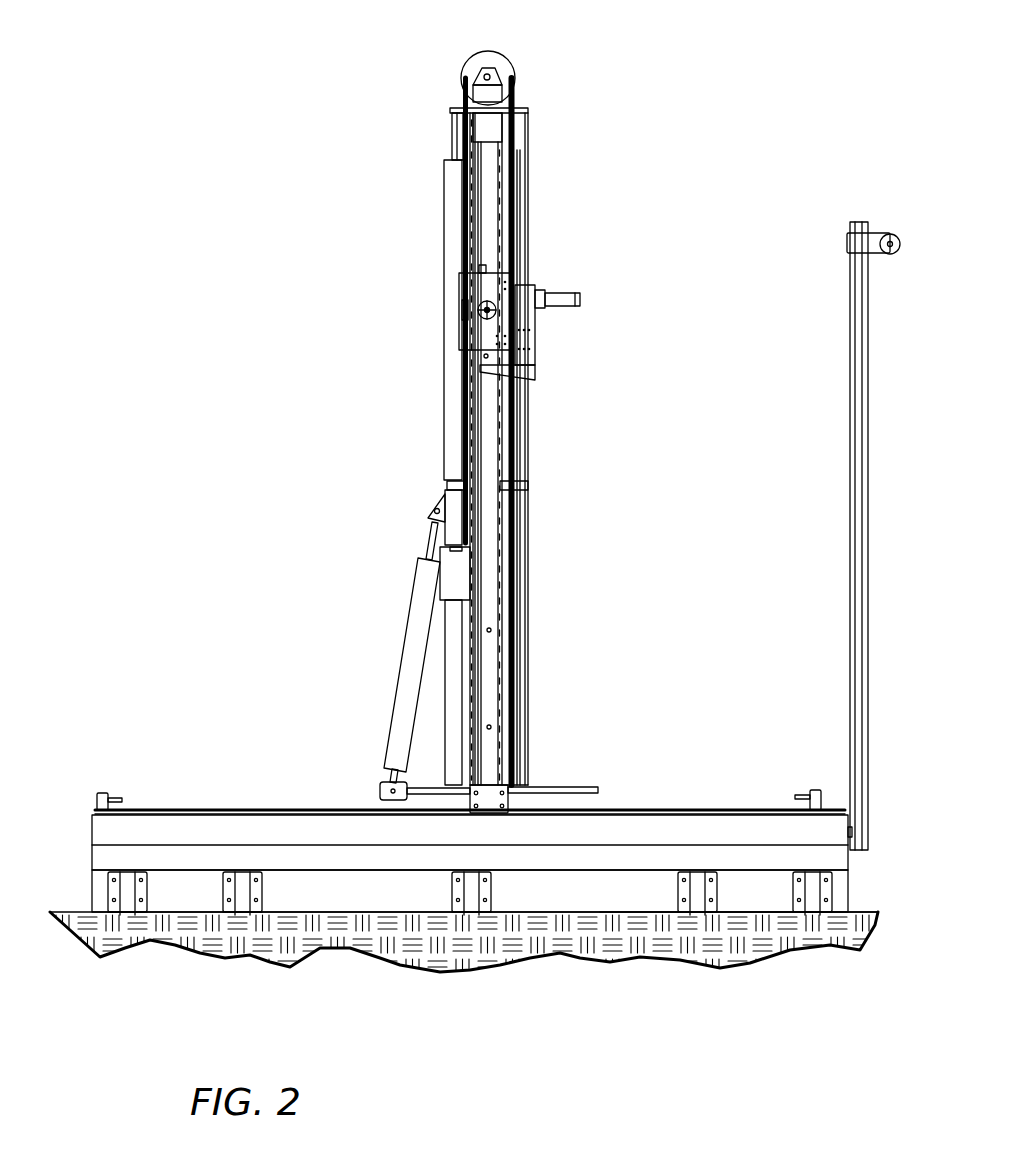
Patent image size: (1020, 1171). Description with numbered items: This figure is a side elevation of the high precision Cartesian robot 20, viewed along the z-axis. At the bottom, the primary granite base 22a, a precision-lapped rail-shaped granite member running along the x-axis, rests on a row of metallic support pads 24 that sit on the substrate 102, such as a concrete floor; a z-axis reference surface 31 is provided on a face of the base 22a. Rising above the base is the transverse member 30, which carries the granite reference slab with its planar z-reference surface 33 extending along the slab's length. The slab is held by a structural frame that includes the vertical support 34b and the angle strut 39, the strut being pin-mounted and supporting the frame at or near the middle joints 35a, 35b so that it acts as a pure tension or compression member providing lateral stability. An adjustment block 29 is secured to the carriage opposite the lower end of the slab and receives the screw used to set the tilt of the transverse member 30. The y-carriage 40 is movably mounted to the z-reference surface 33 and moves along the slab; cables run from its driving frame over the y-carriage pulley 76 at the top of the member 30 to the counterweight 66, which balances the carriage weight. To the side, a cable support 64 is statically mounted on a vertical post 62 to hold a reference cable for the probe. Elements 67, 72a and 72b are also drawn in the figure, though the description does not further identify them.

The Cartesian robot 20 is at (700, 172).
The primary granite base 22a is at (758, 903).
The metallic support pads 24 is at (95, 885).
The adjustment block 29 is at (470, 802).
The transverse member 30 is at (437, 428).
The z-axis reference surface 31 is at (245, 820).
The z-reference surface 33 is at (488, 452).
The vertical support 34b is at (450, 135).
The middle joint 35a is at (505, 487).
The middle joint 35b is at (448, 485).
The angle strut 39 is at (408, 643).
The y-carriage 40 is at (490, 334).
The vertical post 62 is at (862, 510).
The cable support 64 is at (890, 232).
The counterweight 66 is at (440, 572).
The mast column 67 is at (453, 242).
The end stop 72a is at (102, 793).
The end stop 72b is at (812, 790).
The y-carriage pulley 76 is at (500, 66).
The substrate 102 is at (317, 955).